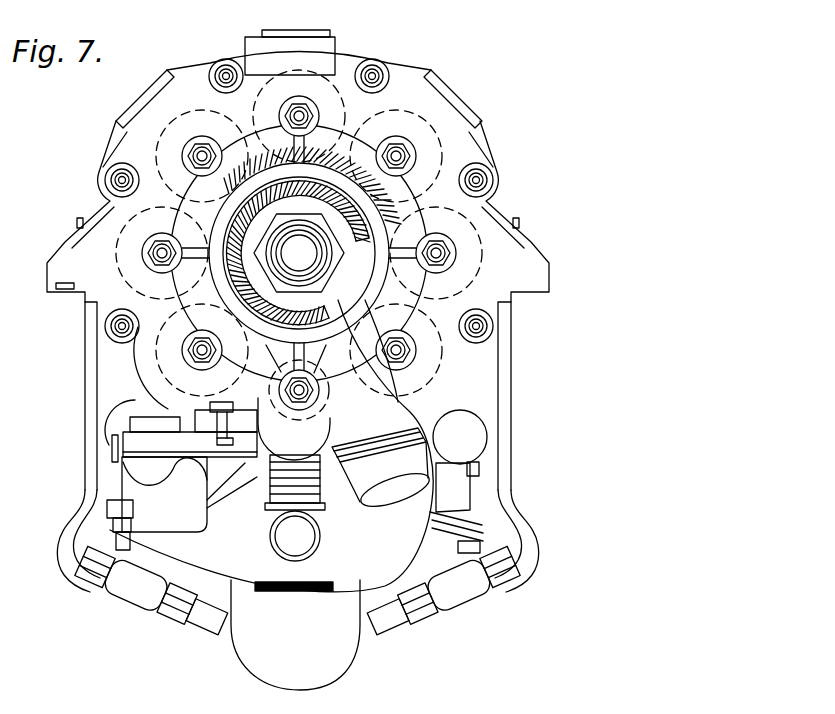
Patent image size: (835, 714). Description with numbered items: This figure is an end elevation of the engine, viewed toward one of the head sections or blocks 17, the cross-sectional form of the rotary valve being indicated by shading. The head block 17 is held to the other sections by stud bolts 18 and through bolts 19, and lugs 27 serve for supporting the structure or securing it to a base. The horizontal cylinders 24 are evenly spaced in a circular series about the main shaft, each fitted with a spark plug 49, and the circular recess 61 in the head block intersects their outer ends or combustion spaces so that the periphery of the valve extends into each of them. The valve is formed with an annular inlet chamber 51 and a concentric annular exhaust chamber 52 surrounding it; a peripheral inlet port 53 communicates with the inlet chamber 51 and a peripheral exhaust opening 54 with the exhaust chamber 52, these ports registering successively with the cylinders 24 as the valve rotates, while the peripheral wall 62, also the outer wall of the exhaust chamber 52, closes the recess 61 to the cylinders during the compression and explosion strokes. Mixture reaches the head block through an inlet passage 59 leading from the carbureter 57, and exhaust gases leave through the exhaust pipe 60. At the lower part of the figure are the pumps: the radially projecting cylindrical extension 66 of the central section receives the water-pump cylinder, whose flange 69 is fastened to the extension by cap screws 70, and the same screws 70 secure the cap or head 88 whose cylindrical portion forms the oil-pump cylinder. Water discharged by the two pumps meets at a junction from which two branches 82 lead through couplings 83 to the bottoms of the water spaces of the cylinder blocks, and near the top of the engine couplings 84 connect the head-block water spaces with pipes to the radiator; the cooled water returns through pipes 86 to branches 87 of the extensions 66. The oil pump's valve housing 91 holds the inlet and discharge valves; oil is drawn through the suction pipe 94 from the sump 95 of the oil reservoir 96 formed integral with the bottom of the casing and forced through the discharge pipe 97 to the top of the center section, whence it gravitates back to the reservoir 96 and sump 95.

The head section 17 is at (486, 138).
The stud bolts 18 is at (110, 172).
The through bolts 19 is at (234, 65).
The cylinders 24 is at (138, 104).
The lugs 27 is at (52, 284).
The spark plugs 49 is at (388, 143).
The inlet chamber 51 is at (245, 298).
The exhaust chamber 52 is at (258, 170).
The inlet port 53 is at (378, 287).
The exhaust opening 54 is at (262, 292).
The carbureter 57 is at (196, 524).
The inlet passage 59 is at (233, 404).
The exhaust pipe 60 is at (366, 500).
The recess 61 is at (410, 313).
The peripheral wall 62 is at (345, 203).
The cylindrical extension 66 is at (116, 500).
The flange 69 is at (114, 520).
The cap screws 70 is at (114, 536).
The branches 82 is at (278, 519).
The couplings 83 is at (270, 486).
The couplings 84 is at (278, 37).
The pipes 86 is at (110, 436).
The branches 87 is at (122, 405).
The cap 88 is at (178, 574).
The valve housing 91 is at (148, 605).
The suction pipe 94 is at (222, 628).
The sump 95 is at (300, 682).
The oil reservoir 96 is at (370, 562).
The discharge pipe 97 is at (84, 488).